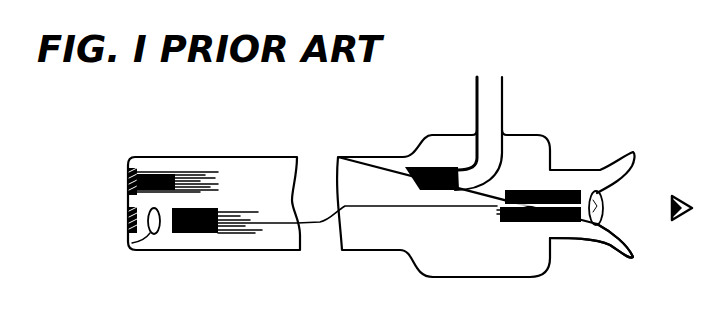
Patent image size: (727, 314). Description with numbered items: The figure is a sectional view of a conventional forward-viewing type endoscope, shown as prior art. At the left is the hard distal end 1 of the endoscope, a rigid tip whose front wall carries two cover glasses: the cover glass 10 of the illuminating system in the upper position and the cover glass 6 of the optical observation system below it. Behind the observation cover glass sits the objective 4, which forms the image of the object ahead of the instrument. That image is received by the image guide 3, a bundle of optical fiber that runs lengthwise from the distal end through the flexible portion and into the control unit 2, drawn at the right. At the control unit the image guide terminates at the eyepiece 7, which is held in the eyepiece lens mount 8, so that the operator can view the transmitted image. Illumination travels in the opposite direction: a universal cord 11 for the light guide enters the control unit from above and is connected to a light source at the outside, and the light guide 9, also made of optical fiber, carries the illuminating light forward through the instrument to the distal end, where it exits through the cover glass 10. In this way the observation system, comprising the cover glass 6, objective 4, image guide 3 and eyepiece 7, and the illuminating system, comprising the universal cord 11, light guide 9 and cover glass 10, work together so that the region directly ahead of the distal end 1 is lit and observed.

The hard distal end 1 is at (238, 157).
The control unit 2 is at (373, 157).
The image guide 3 is at (227, 233).
The objective 4 is at (128, 248).
The cover glass of the optical observation system 6 is at (128, 223).
The eyepiece 7 is at (603, 207).
The eyepiece lens mount 8 is at (613, 242).
The light guide 9 is at (183, 190).
The cover glass of the illuminating system 10 is at (128, 183).
The universal cord 11 is at (505, 101).